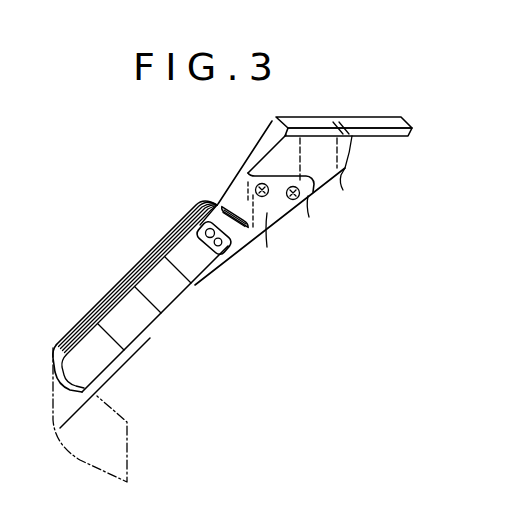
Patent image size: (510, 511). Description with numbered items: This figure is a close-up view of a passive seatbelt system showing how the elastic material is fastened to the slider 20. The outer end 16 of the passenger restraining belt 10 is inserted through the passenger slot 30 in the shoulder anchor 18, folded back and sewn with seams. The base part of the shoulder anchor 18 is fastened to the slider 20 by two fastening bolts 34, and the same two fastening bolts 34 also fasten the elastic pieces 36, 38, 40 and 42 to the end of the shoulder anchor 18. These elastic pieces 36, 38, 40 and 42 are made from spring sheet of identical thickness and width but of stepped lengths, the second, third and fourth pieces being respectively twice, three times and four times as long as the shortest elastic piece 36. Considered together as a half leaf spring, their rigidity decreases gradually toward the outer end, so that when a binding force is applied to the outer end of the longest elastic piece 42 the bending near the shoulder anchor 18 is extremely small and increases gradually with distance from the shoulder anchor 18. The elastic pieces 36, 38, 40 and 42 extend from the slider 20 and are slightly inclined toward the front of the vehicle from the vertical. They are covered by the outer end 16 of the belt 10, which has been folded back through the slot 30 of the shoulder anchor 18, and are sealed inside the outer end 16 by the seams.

The passenger restraining belt 10 is at (127, 460).
The outer end of the belt 16 is at (150, 333).
The shoulder anchor 18 is at (273, 203).
The slider 20 is at (338, 175).
The passenger slot 30 is at (216, 204).
The fastening bolts 34 is at (225, 287).
The elastic piece 36 is at (180, 237).
The elastic piece 38 is at (147, 278).
The elastic piece 40 is at (112, 308).
The elastic piece 42 is at (93, 362).